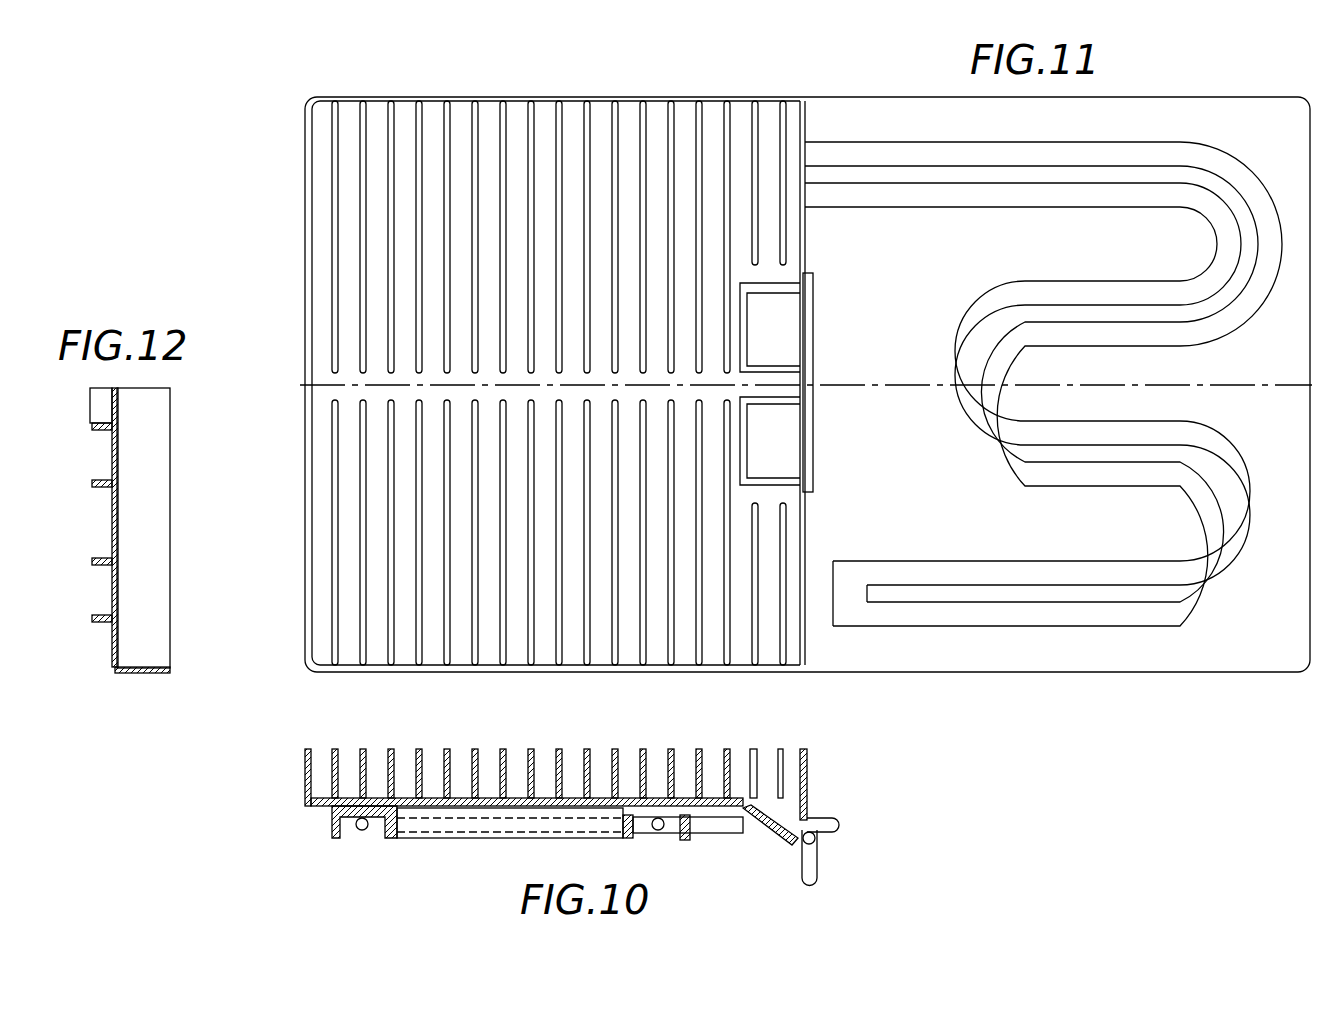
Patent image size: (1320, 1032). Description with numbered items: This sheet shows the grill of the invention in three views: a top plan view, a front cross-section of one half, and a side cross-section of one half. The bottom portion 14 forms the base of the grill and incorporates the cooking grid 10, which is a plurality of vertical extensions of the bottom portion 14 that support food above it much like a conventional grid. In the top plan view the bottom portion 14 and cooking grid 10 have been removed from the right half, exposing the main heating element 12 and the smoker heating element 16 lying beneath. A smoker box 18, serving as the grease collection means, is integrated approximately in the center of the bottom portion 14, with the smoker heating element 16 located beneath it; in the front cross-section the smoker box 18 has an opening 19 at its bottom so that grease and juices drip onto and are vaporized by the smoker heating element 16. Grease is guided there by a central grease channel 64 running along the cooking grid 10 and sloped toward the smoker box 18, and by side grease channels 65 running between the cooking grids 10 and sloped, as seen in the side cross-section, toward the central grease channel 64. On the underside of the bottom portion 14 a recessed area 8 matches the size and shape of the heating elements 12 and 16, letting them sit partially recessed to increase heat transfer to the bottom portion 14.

In FIG. 12, the recessed area 8 is at (92, 472).
In FIG. 10, the recessed area 8 is at (346, 838).
In FIG. 11, the cooking grid 10 is at (388, 580).
In FIG. 10, the cooking grid 10 is at (475, 748).
In FIG. 11, the main heating element 12 is at (1140, 312).
In FIG. 10, the main heating element 12 is at (405, 830).
In FIG. 11, the bottom portion 14 is at (342, 98).
In FIG. 12, the bottom portion 14 is at (150, 674).
In FIG. 10, the bottom portion 14 is at (305, 780).
In FIG. 11, the smoker heating element 16 is at (812, 302).
In FIG. 10, the smoker heating element 16 is at (816, 838).
In FIG. 11, the smoker box 18 is at (783, 428).
In FIG. 10, the smoker box 18 is at (790, 802).
In FIG. 10, the opening 19 is at (788, 828).
In FIG. 11, the central grease channel 64 is at (350, 382).
In FIG. 11, the side grease channels 65 is at (322, 428).